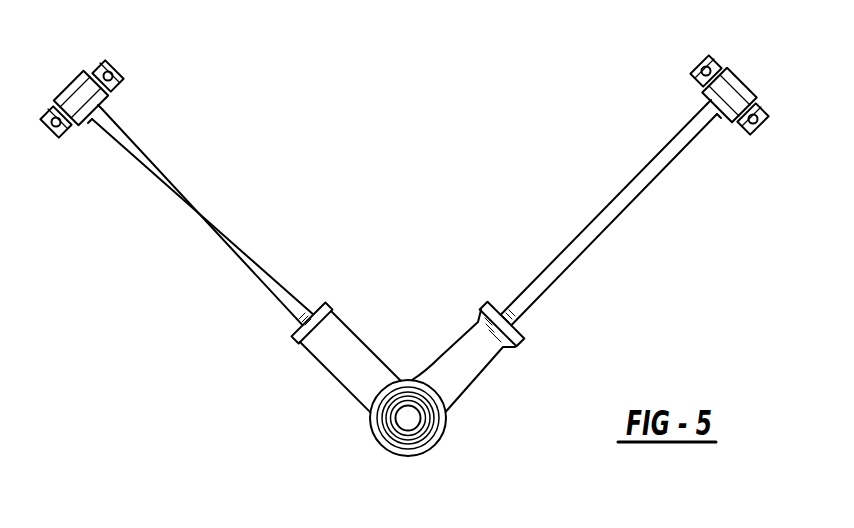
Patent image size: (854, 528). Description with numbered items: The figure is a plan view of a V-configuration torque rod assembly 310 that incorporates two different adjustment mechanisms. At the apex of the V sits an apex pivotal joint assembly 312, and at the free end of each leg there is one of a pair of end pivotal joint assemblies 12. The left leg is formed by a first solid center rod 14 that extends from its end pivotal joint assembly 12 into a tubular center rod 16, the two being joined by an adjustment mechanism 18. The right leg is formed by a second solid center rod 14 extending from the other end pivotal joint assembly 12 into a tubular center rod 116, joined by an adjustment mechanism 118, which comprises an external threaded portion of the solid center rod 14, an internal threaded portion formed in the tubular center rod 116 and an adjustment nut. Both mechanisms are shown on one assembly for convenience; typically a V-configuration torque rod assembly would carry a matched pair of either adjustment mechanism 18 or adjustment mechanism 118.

The pivotal joint assembly 12 is at (78, 92).
The solid center rod 14 is at (183, 189).
The tubular center rod 16 is at (345, 338).
The adjustment mechanism 18 is at (281, 342).
The tubular center rod 116 is at (472, 355).
The adjustment mechanism 118 is at (507, 281).
The V-configuration torque rod assembly 310 is at (457, 138).
The apex pivotal joint assembly 312 is at (448, 455).